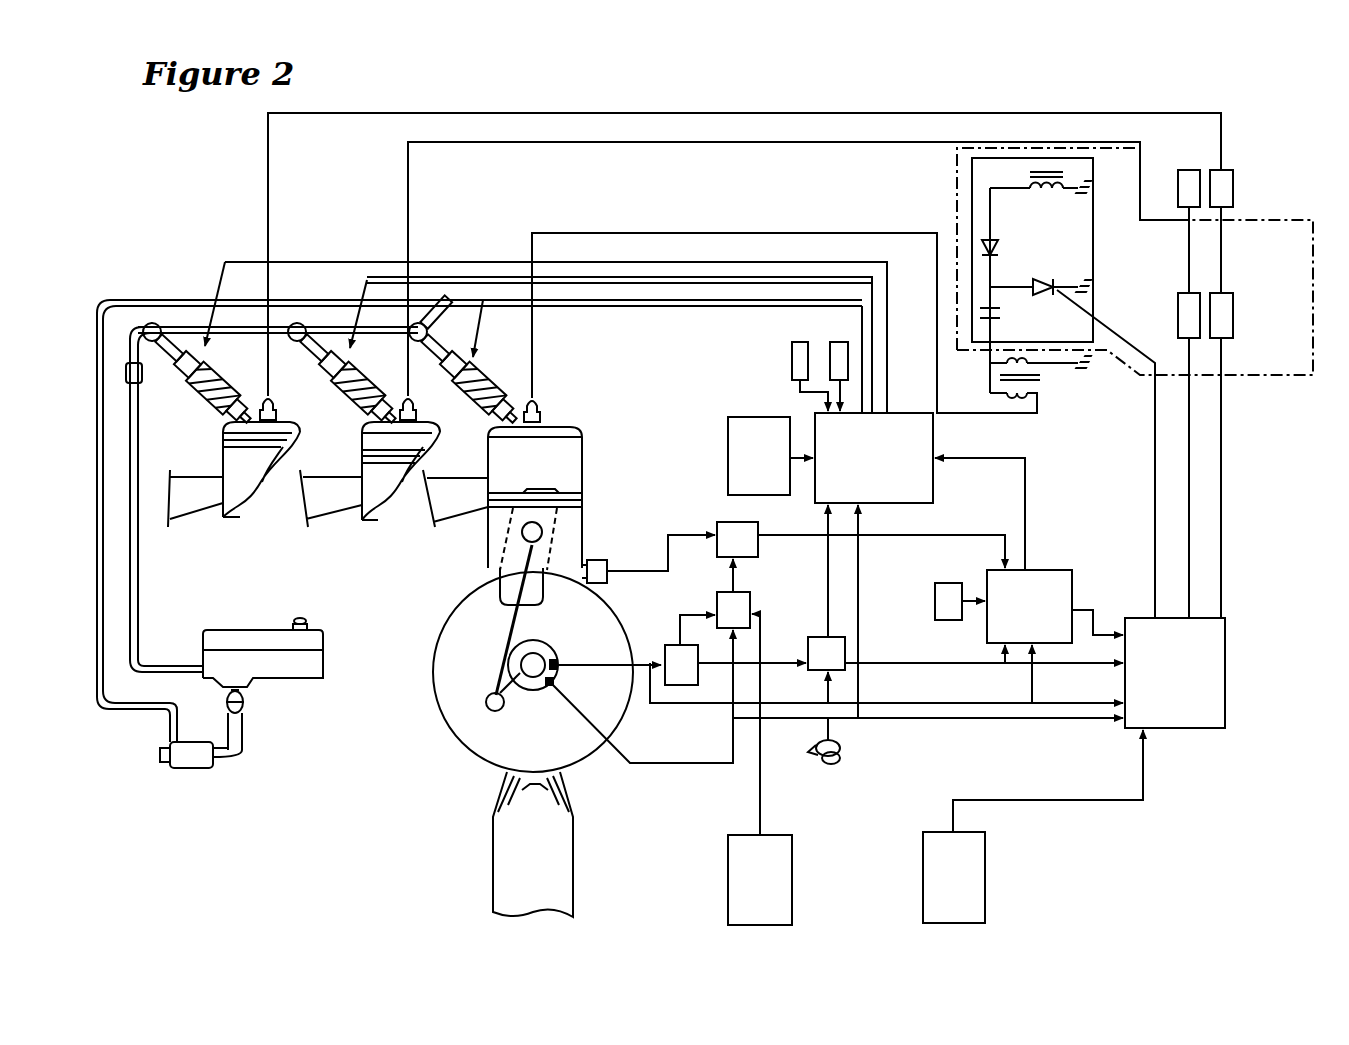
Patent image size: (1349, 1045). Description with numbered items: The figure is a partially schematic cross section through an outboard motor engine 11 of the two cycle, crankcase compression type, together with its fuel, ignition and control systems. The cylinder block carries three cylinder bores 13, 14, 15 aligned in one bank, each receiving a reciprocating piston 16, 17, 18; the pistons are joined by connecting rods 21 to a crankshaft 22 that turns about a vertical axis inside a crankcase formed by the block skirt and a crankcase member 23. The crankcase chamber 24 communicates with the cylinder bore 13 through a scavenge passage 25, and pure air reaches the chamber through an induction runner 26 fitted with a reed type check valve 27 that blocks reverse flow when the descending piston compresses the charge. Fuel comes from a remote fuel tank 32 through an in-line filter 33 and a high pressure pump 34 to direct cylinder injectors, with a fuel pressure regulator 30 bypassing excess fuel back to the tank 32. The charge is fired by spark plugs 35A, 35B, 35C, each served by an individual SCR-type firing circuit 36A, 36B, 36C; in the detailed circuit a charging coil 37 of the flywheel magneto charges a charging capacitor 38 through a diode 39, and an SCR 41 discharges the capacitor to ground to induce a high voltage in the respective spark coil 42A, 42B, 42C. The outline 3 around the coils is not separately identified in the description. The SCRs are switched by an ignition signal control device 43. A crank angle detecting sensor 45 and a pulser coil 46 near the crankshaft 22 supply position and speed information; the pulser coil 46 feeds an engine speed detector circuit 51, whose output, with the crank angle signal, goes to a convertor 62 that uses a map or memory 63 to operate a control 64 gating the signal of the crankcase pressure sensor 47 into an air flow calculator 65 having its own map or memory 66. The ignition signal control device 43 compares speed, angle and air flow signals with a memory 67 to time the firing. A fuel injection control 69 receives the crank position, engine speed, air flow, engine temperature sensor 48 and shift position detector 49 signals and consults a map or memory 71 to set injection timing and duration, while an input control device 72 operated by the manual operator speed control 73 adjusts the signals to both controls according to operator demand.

The ignition system 3 is at (1293, 213).
The internal combustion engine 11 is at (630, 515).
The cylinder bore 13 is at (572, 462).
The cylinder bore 14 is at (747, 356).
The cylinder bore 15 is at (686, 342).
The piston 16 is at (578, 535).
The piston 17 is at (377, 505).
The piston 18 is at (243, 498).
The connecting rod 21 is at (508, 647).
The crankshaft 22 is at (497, 668).
The crankcase member 23 is at (438, 730).
The crankcase chamber 24 is at (496, 752).
The scavenge passage 25 is at (547, 590).
The manifold runner 26 is at (573, 843).
The reed type check valve 27 is at (563, 786).
The fuel pressure regulator 30 is at (450, 302).
The fuel tank 32 is at (287, 680).
The in-line filter 33 is at (247, 708).
The high pressure pump 34 is at (193, 770).
The spark plug 35A is at (540, 395).
The spark plug 35B is at (413, 412).
The spark plug 35C is at (278, 404).
The firing circuit 36A is at (1066, 346).
The firing circuit 36B is at (1177, 325).
The firing circuit 36C is at (1235, 330).
The charging coil 37 is at (1050, 195).
The charging capacitor 38 is at (1000, 312).
The diode 39 is at (1000, 247).
The SCR 41 is at (1045, 280).
The spark coil 42A is at (1020, 405).
The spark coil 42B is at (1177, 180).
The spark coil 42C is at (1233, 195).
The ignition signal control device 43 is at (1228, 645).
The crank angle detecting sensor 45 is at (548, 690).
The pulser coil 46 is at (557, 658).
The crankcase pressure sensor 47 is at (600, 560).
The engine temperature sensor 48 is at (790, 372).
The shift position detector 49 is at (840, 340).
The engine speed detector circuit 51 is at (675, 645).
The convertor 62 is at (750, 600).
The map or memory 63 is at (792, 875).
The control 64 is at (723, 520).
The air flow calculator 65 is at (1060, 570).
The map or memory 66 is at (933, 600).
The memory 67 is at (985, 862).
The fuel injection control 69 is at (920, 491).
The map or memory 71 is at (727, 437).
The input control device 72 is at (810, 640).
The manual operator speed control 73 is at (838, 768).